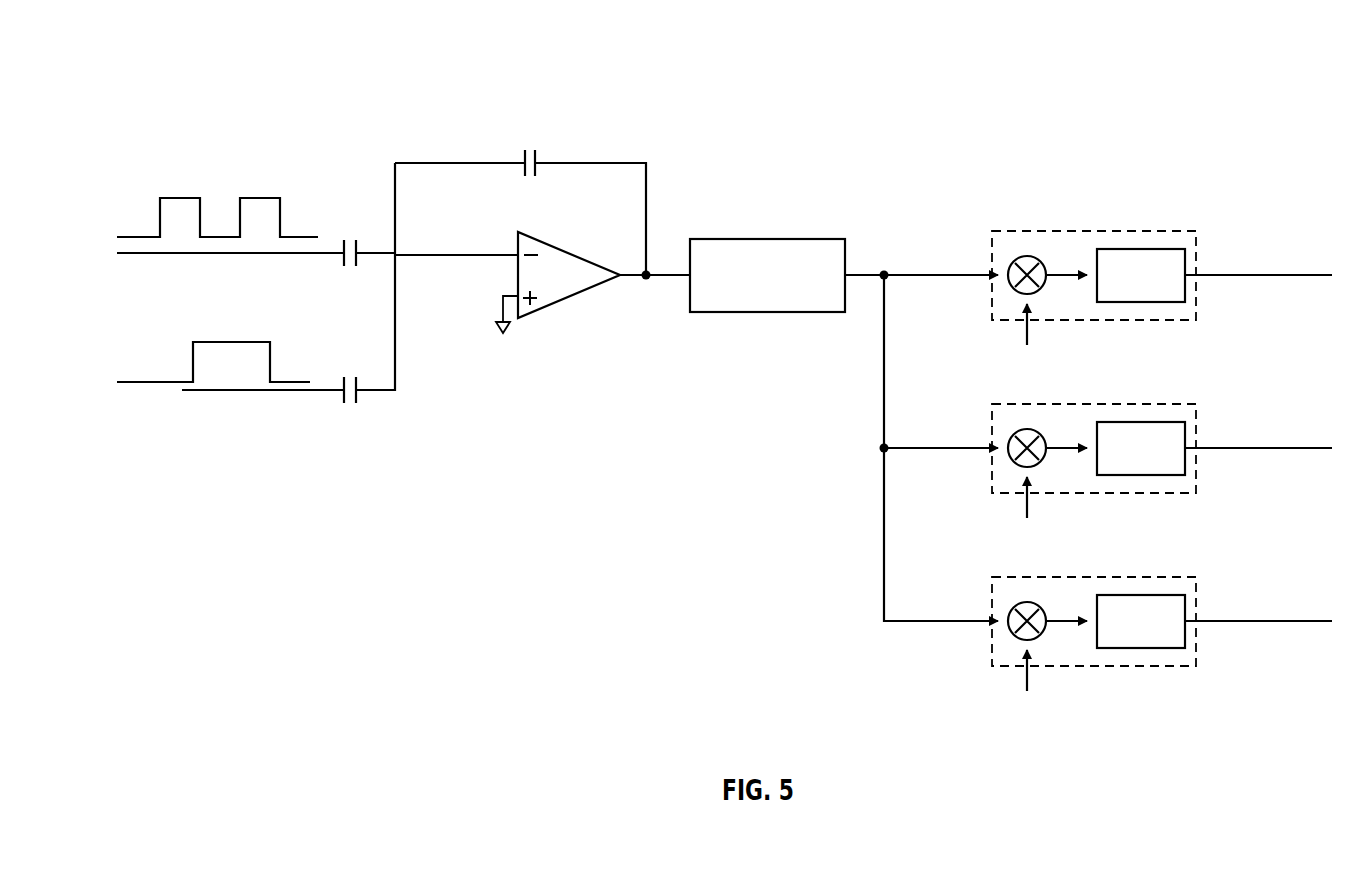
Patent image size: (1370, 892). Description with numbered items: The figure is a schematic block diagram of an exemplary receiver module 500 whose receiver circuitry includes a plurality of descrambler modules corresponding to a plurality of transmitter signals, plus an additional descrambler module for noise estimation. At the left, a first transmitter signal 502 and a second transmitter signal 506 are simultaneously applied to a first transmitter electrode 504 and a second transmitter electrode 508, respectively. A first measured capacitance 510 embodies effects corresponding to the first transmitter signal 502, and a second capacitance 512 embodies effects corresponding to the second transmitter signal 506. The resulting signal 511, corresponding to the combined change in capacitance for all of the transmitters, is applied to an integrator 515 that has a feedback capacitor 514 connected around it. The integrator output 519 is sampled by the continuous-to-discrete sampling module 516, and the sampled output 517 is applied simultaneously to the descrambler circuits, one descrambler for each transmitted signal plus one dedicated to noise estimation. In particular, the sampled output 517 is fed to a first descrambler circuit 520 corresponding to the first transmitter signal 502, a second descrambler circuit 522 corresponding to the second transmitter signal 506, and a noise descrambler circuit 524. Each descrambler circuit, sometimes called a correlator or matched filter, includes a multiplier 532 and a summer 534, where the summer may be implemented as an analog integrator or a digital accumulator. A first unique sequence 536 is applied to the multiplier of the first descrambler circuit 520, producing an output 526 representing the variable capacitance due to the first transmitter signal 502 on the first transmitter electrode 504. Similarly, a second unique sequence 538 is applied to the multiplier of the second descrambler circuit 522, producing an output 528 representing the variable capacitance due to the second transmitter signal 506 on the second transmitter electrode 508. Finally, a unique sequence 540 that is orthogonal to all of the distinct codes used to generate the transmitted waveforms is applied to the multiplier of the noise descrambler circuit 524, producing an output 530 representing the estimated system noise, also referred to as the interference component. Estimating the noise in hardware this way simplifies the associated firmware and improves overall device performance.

The receiver module 500 is at (190, 98).
The first transmitter signal 502 is at (180, 197).
The first transmitter electrode 504 is at (180, 255).
The second transmitter signal 506 is at (230, 340).
The second transmitter electrode 508 is at (181, 392).
The first measured capacitance 510 is at (350, 237).
The resulting signal 511 is at (487, 255).
The second capacitance 512 is at (360, 394).
The feedback capacitor 514 is at (540, 156).
The integrator 515 is at (570, 250).
The sampling module 516 is at (757, 238).
The sampled output 517 is at (862, 275).
The integrator output 519 is at (665, 278).
The first descrambler circuit 520 is at (1098, 230).
The second descrambler circuit 522 is at (1070, 402).
The noise descrambler circuit 524 is at (1070, 577).
The output 526 is at (1268, 277).
The output 528 is at (1268, 450).
The output 530 is at (1268, 623).
The multiplier 532 is at (1027, 256).
The summer 534 is at (1142, 250).
The first unique sequence 536 is at (1020, 312).
The second unique sequence 538 is at (1020, 485).
The unique sequence 540 is at (1020, 657).